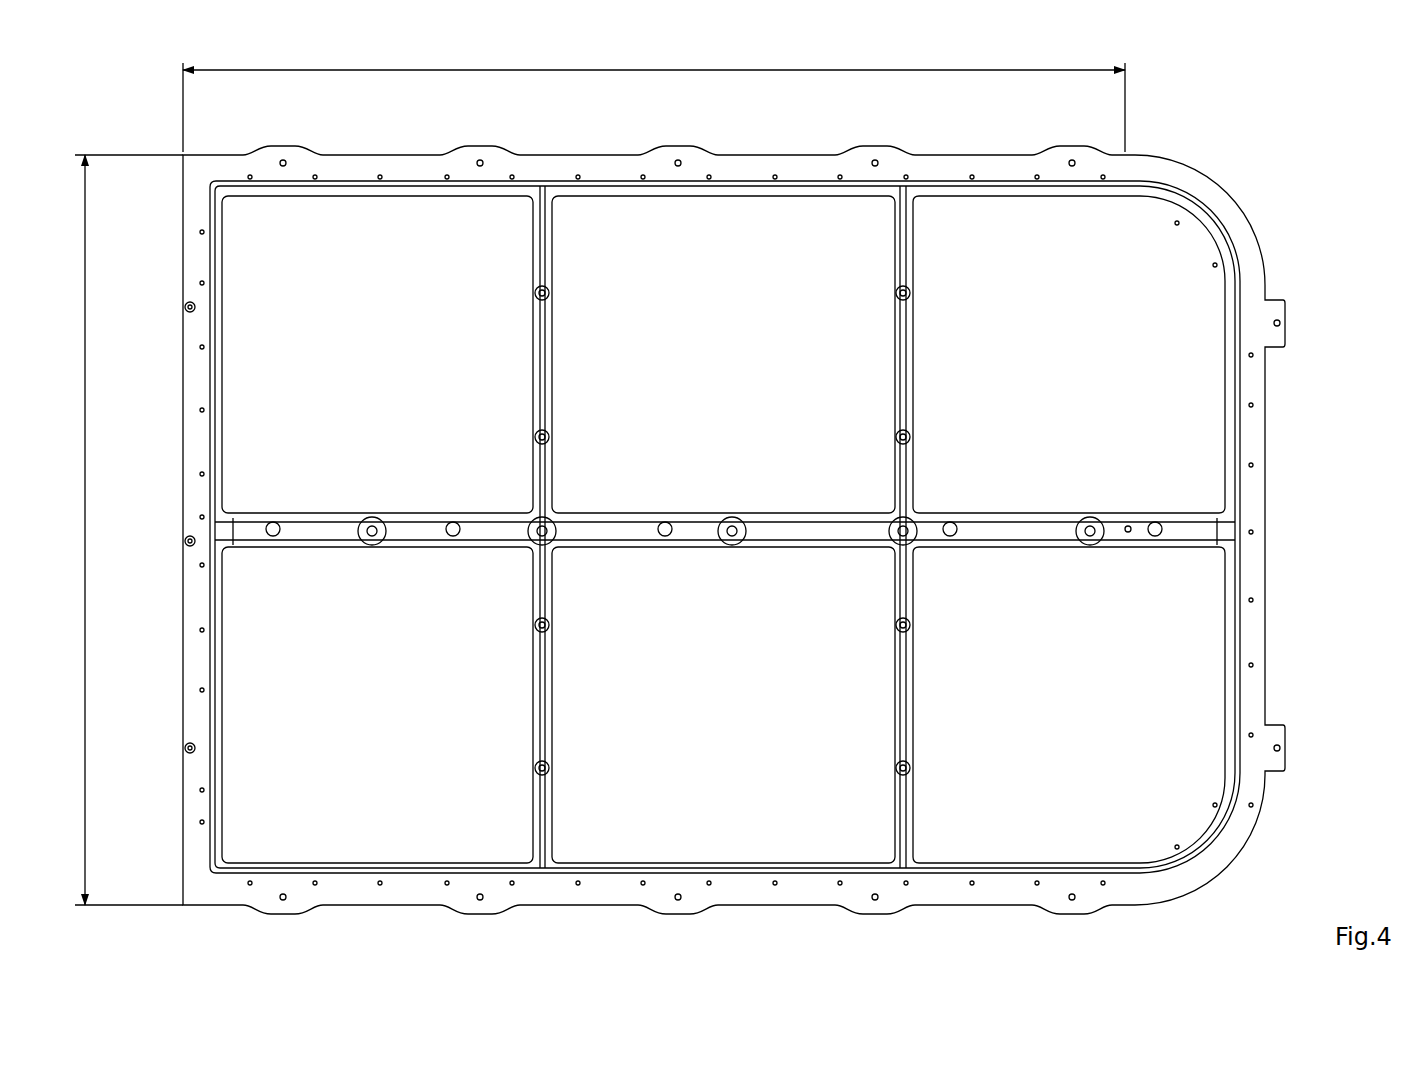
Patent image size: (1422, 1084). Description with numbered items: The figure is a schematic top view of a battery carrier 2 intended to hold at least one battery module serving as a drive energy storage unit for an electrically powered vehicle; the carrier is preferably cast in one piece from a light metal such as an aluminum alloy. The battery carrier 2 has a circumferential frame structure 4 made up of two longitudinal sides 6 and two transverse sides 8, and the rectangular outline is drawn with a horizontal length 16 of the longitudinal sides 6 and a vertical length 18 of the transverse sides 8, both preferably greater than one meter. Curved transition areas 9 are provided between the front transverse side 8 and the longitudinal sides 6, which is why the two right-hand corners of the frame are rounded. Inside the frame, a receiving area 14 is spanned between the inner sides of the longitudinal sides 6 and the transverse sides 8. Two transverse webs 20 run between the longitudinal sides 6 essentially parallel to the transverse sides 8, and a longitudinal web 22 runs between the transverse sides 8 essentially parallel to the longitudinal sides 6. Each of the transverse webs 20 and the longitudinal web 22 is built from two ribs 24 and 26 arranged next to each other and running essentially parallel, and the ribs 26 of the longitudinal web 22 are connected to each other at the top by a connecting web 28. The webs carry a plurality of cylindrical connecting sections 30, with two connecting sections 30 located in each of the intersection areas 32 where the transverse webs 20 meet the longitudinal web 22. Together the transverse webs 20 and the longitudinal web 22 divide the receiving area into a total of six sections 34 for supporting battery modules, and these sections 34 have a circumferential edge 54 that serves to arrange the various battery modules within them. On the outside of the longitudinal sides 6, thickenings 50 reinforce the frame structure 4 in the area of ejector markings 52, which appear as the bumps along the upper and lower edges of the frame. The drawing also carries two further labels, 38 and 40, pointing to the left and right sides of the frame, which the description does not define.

The battery carrier 2 is at (1320, 217).
The circumferential frame structure 4 is at (750, 152).
The longitudinal sides 6 is at (527, 150).
The transverse sides 8 is at (178, 385).
The curved transition areas 9 is at (1245, 180).
The receiving area 14 is at (437, 225).
The length 16 is at (654, 95).
The length 18 is at (118, 530).
The transverse webs 20 is at (932, 338).
The longitudinal web 22 is at (425, 515).
The ribs 24 is at (898, 735).
The ribs 26 is at (1050, 523).
The connecting web 28 is at (1130, 523).
The cylindrical connecting sections 30 is at (534, 292).
The intersection areas 32 is at (888, 508).
The sections 34 is at (398, 331).
The side wall 38 is at (178, 632).
The side wall 40 is at (1278, 405).
The thickenings 50 is at (875, 158).
The ejector markings 52 is at (284, 158).
The circumferential edge 54 is at (215, 268).